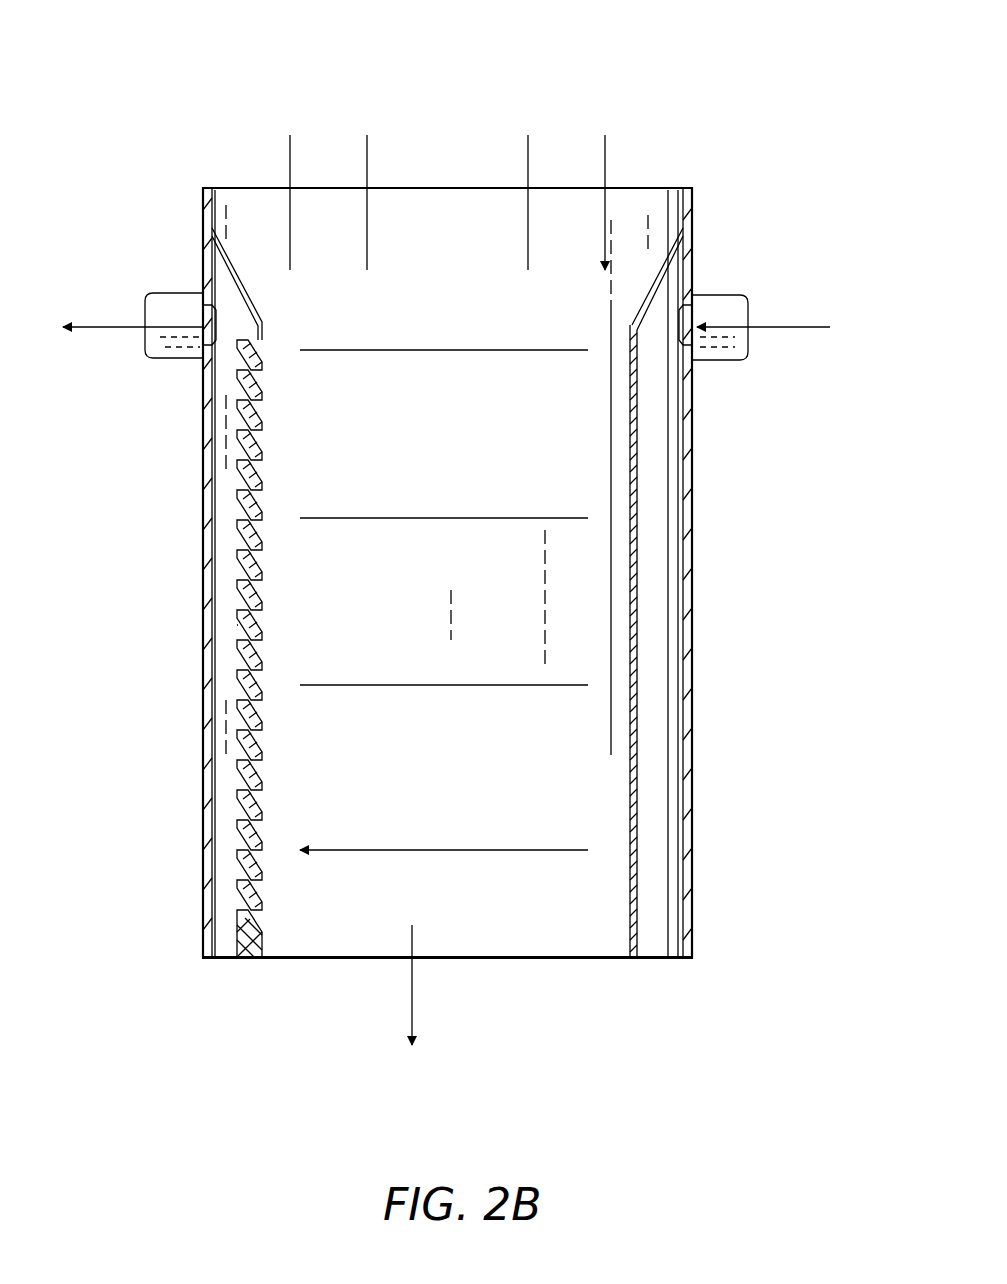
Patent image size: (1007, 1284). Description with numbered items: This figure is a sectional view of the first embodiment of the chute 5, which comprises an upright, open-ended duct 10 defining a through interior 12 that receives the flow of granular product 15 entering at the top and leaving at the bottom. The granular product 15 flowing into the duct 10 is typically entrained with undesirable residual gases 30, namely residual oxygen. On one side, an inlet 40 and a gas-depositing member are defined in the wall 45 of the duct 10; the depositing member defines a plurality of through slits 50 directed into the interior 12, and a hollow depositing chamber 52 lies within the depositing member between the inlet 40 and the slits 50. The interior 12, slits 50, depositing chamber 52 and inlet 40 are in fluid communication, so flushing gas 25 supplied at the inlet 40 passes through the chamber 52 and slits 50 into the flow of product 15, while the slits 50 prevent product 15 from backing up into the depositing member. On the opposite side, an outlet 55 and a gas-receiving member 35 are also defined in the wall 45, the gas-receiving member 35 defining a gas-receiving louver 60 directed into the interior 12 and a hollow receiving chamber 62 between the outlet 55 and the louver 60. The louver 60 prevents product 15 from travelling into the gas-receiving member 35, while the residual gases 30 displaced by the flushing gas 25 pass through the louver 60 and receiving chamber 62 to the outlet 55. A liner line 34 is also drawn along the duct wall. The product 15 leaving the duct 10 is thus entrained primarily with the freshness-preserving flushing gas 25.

The chute 5 is at (760, 52).
The duct 10 is at (205, 212).
The interior 12 is at (565, 958).
The granular product 15 is at (367, 163).
The flushing gas 25 is at (435, 345).
The residual gases 30 is at (120, 340).
The inner wall liner 34 is at (213, 490).
The gas-receiving member 35 is at (237, 283).
The inlet 40 is at (728, 295).
The wall 45 is at (695, 440).
The through slits 50 is at (638, 630).
The depositing chamber 52 is at (655, 540).
The outlet 55 is at (180, 293).
The gas-receiving louver 60 is at (237, 560).
The receiving chamber 62 is at (237, 625).